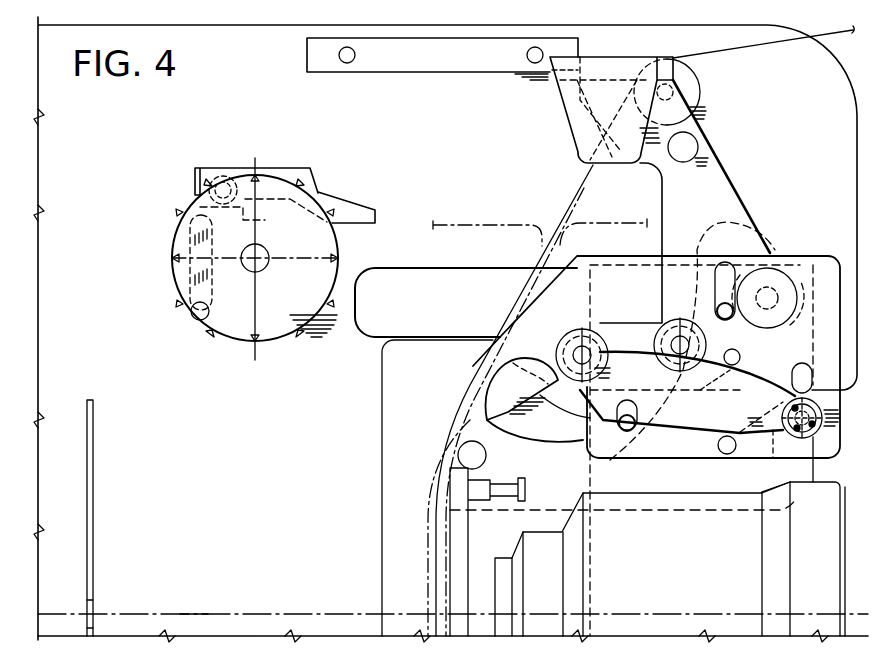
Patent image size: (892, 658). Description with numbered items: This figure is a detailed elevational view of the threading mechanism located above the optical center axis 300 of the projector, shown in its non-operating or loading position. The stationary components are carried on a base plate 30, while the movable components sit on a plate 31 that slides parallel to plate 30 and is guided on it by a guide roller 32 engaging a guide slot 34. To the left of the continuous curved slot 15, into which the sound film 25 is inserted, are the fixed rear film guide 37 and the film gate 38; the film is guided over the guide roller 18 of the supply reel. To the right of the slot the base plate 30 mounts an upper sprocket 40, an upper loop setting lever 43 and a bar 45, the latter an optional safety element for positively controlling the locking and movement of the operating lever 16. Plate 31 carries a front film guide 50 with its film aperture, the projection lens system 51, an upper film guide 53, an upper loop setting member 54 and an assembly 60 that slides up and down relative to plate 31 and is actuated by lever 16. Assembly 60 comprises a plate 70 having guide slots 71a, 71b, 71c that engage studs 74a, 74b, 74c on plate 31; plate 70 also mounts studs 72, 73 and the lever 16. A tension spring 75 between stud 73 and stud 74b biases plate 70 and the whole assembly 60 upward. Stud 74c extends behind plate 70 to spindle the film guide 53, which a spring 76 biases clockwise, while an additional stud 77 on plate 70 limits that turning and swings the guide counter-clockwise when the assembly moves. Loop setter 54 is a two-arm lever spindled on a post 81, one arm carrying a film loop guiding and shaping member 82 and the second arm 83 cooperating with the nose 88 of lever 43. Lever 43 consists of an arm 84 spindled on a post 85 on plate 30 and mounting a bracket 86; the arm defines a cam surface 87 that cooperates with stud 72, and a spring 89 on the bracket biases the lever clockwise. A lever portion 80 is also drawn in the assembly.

The curved slot 15 is at (456, 405).
The operating lever 16 is at (567, 118).
The guide roller 18 is at (689, 91).
The sound film 25 is at (575, 192).
The base plate 30 is at (258, 439).
The slidable plate 31 is at (382, 468).
The guide roller 32 is at (796, 264).
The guide slot 34 is at (440, 273).
The fixed rear film guide 37 is at (93, 518).
The film gate 38 is at (93, 613).
The upper sprocket 40 is at (253, 349).
The upper loop setting lever 43 is at (188, 166).
The bar 45 is at (455, 62).
The front film guide 50 is at (455, 556).
The projection lens system 51 is at (699, 560).
The upper film guide 53 is at (668, 436).
The upper loop setting member 54 is at (548, 440).
The slidable assembly 60 is at (735, 173).
The plate 70 is at (712, 211).
The guide slot 71a is at (594, 325).
The guide slot 71b is at (738, 262).
The guide slot 71c is at (796, 365).
The stud 72 is at (688, 148).
The stud 73 is at (716, 450).
The stud 74a is at (614, 440).
The stud 74b is at (717, 306).
The stud 74c is at (815, 440).
The tension spring 75 is at (760, 416).
The spring 76 is at (772, 458).
The stud 77 is at (714, 387).
The cam lever 80 is at (576, 419).
The post 81 is at (662, 325).
The film loop guiding and shaping member 82 is at (503, 358).
The second arm 83 is at (700, 240).
The arm 84 is at (227, 168).
The post 85 is at (263, 219).
The bracket 86 is at (200, 190).
The cam surface 87 is at (315, 182).
The nose 88 is at (380, 213).
The spring 89 is at (180, 272).
The optical center axis 300 is at (206, 610).